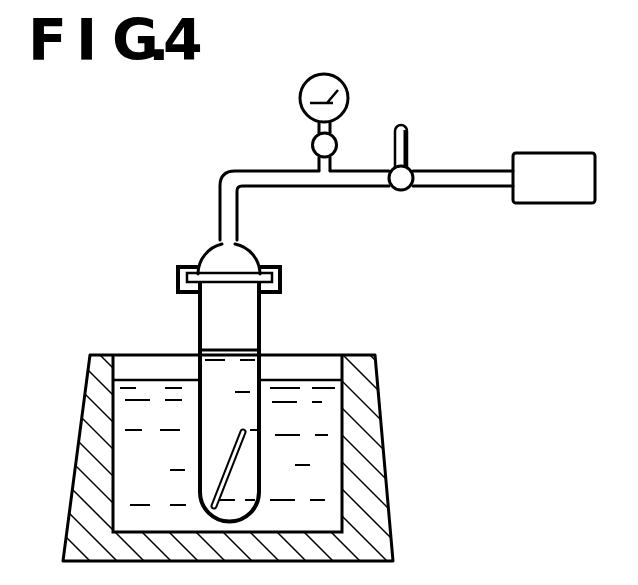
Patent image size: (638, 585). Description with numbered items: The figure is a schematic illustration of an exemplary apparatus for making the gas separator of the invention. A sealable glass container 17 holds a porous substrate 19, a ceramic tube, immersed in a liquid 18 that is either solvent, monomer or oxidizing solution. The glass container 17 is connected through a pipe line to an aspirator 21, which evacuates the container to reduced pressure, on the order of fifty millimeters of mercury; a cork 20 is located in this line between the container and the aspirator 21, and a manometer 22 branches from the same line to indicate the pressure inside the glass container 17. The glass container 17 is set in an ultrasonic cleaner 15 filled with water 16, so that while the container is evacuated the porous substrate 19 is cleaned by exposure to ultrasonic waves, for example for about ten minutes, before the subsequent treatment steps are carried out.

The ultrasonic cleaner 15 is at (370, 485).
The water 16 is at (317, 443).
The glass container 17 is at (260, 323).
The solvent, monomer or oxidizing solution 18 is at (222, 382).
The porous substrate 19 is at (224, 466).
The cork 20 is at (401, 190).
The aspirator 21 is at (545, 160).
The manometer 22 is at (300, 96).